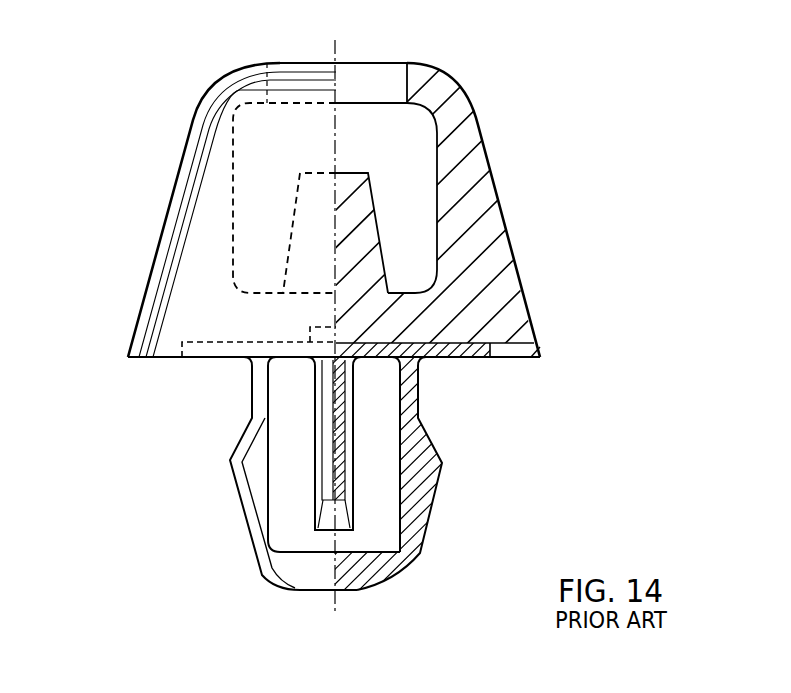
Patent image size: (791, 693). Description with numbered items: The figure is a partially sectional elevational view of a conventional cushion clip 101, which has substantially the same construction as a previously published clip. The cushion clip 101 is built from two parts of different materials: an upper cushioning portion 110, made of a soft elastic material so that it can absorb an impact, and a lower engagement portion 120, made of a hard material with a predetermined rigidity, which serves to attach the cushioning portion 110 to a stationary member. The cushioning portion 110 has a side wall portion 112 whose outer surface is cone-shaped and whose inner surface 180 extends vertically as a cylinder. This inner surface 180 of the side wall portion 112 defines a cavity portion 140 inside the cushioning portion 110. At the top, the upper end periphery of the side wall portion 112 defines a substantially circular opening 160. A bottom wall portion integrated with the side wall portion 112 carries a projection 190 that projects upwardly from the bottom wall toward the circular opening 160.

The cushion clip 101 is at (176, 121).
The cushioning portion 110 is at (528, 258).
The side wall portion 112 is at (466, 215).
The engagement portion 120 is at (462, 478).
The cavity portion 140 is at (402, 126).
The circular opening 160 is at (372, 92).
The inner surface 180 is at (432, 178).
The projection 190 is at (357, 260).